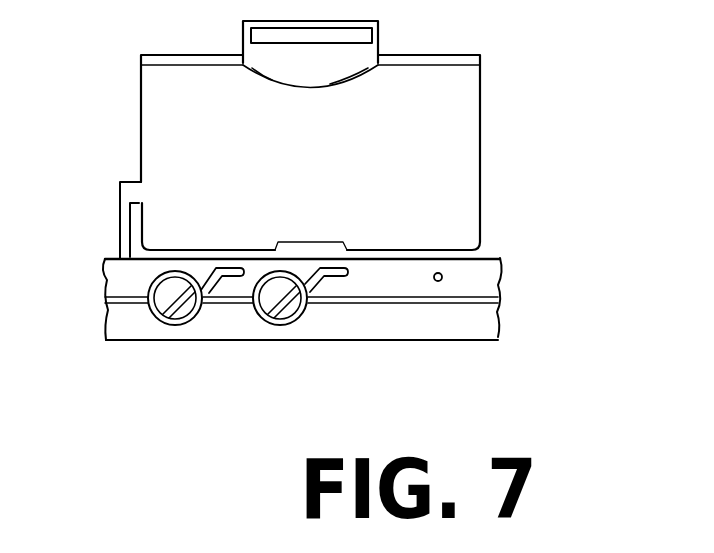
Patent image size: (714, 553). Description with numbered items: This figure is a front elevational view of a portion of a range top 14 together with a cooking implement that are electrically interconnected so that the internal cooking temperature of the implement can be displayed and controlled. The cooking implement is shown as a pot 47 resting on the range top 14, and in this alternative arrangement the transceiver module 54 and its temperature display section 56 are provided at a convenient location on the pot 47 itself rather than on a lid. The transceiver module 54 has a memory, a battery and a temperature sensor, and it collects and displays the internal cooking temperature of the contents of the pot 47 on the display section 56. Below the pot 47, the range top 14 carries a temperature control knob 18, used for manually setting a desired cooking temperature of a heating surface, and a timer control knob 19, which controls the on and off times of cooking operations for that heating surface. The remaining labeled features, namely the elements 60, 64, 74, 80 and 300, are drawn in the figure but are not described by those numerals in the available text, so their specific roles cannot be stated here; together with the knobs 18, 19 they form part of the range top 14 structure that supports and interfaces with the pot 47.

The range top 14 is at (483, 254).
The temperature control knob 18 is at (180, 325).
The timer control knob 19 is at (294, 322).
The pot 47 is at (480, 166).
The transceiver module 54 is at (272, 74).
The temperature display section 56 is at (308, 88).
The base 60 is at (500, 282).
The retaining clip 64 is at (222, 283).
The hole 74 is at (436, 283).
The bracket 80 is at (120, 207).
The recess 300 is at (310, 55).